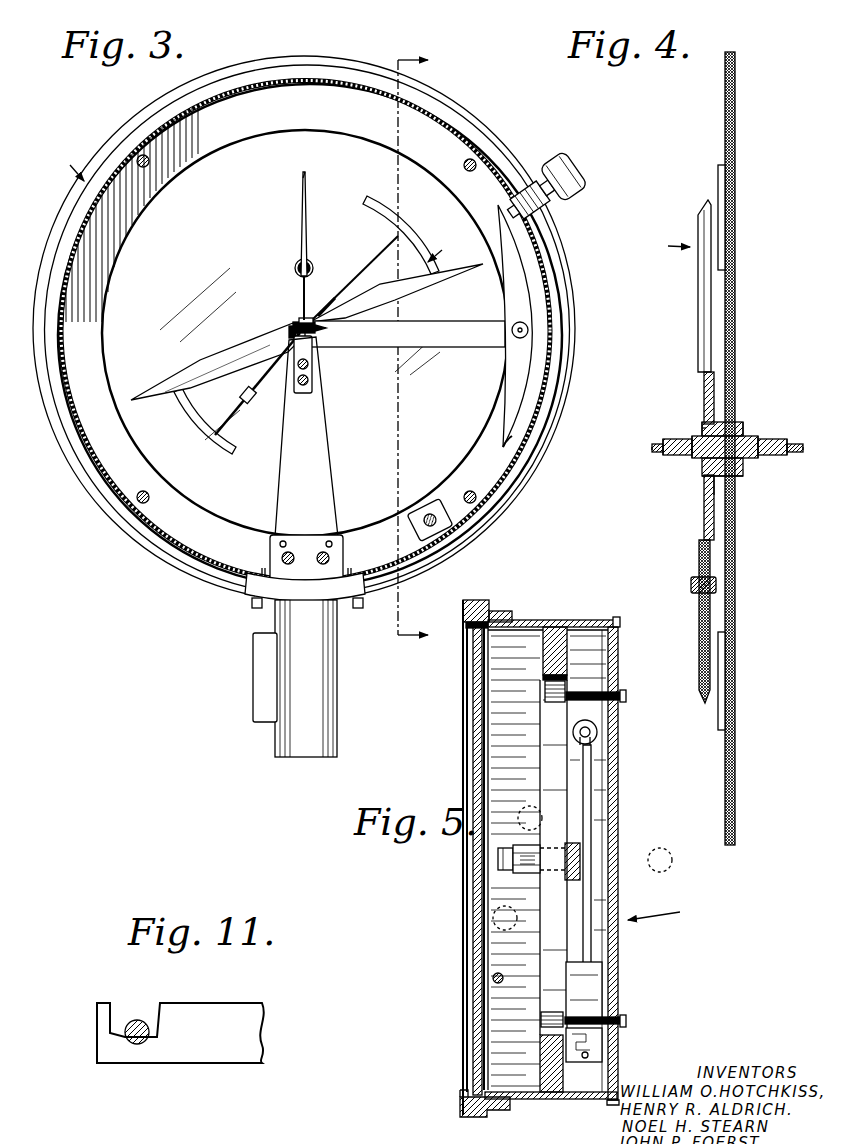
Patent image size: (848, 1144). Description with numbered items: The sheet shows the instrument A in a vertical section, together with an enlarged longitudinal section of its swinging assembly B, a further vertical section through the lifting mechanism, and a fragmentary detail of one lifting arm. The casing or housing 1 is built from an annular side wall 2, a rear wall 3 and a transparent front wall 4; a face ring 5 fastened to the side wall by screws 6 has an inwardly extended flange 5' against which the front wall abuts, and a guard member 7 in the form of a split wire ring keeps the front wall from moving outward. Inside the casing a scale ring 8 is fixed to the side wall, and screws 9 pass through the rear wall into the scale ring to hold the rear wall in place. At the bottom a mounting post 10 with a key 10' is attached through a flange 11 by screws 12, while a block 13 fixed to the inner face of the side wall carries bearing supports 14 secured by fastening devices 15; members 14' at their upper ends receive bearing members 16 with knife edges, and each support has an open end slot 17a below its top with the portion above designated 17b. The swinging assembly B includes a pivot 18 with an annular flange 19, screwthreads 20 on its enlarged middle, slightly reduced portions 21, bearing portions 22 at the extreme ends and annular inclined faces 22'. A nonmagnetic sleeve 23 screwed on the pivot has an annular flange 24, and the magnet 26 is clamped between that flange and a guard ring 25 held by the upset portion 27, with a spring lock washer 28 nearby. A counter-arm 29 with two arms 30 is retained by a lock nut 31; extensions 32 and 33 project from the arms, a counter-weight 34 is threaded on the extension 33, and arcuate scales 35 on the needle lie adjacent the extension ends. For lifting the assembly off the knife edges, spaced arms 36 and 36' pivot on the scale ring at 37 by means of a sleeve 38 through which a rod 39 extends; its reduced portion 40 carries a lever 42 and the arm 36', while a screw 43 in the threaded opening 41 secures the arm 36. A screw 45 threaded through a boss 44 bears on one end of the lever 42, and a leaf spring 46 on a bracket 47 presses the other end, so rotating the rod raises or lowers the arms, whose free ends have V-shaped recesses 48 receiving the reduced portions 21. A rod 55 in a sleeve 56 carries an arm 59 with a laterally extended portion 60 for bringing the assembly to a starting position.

In FIG. 3, the casing or housing 1 is at (152, 134).
In FIG. 5, the casing or housing 1 is at (562, 620).
In FIG. 3, the annular side wall 2 is at (565, 362).
In FIG. 5, the annular side wall 2 is at (528, 1100).
In FIG. 5, the rear wall 3 is at (620, 752).
In FIG. 3, the transparent front wall 4 is at (157, 240).
In FIG. 5, the transparent front wall 4 is at (473, 750).
In FIG. 3, the face ring 5 is at (310, 349).
In FIG. 5, the face ring 5 is at (474, 597).
In FIG. 5, the inwardly extended flange 5' is at (502, 598).
In FIG. 5, the screws 6 is at (492, 978).
In FIG. 5, the guard member 7 is at (463, 652).
In FIG. 3, the scale ring 8 is at (194, 560).
In FIG. 5, the scale ring 8 is at (570, 622).
In FIG. 3, the screws 9 is at (137, 157).
In FIG. 5, the screws 9 is at (590, 693).
In FIG. 3, the mounting post 10 is at (297, 697).
In FIG. 3, the key 10' is at (242, 677).
In FIG. 3, the flange 11 is at (307, 595).
In FIG. 3, the screws 12 is at (252, 604).
In FIG. 3, the block 13 is at (268, 550).
In FIG. 3, the bearing supports 14 is at (289, 437).
In FIG. 3, the members 14' is at (325, 367).
In FIG. 3, the fastening devices 15 is at (321, 552).
In FIG. 3, the bearing members 16 is at (290, 334).
In FIG. 3, the open end slot 17a is at (324, 329).
In FIG. 3, the portion of bearing support above slot 17b is at (310, 318).
In FIG. 3, the pivot 18 is at (295, 322).
In FIG. 4, the pivot 18 is at (685, 436).
In FIG. 4, the annular flange 19 is at (770, 438).
In FIG. 4, the screwthreads 20 is at (700, 460).
In FIG. 4, the portions of pivot 21 is at (672, 455).
In FIG. 11, the portions of pivot 21 is at (146, 1045).
In FIG. 4, the bearing portions 22 is at (722, 460).
In FIG. 4, the annular inclined faces 22' is at (710, 444).
In FIG. 4, the nonmagnetic sleeve 23 is at (726, 422).
In FIG. 4, the annular flange 24 is at (735, 493).
In FIG. 4, the guard ring 25 is at (735, 470).
In FIG. 3, the magnet 26 is at (197, 368).
In FIG. 4, the magnet 26 is at (737, 592).
In FIG. 4, the upset portion 27 is at (748, 430).
In FIG. 4, the spring lock washer 28 is at (702, 426).
In FIG. 4, the counter-arm 29 is at (716, 420).
In FIG. 3, the arms 30 is at (333, 298).
In FIG. 4, the arms 30 is at (716, 374).
In FIG. 4, the lock nut 31 is at (712, 478).
In FIG. 3, the counter-arm extension 32 is at (398, 238).
In FIG. 4, the counter-arm extension 32 is at (698, 305).
In FIG. 3, the counter-arm extension 33 is at (227, 415).
In FIG. 4, the counter-arm extension 33 is at (699, 650).
In FIG. 3, the counter-weight 34 is at (250, 396).
In FIG. 4, the counter-weight 34 is at (691, 585).
In FIG. 3, the arcuate scales 35 is at (386, 207).
In FIG. 4, the arcuate scales 35 is at (718, 178).
In FIG. 5, the arm 36 is at (485, 878).
In FIG. 3, the arm 36' is at (405, 327).
In FIG. 5, the arm 36' is at (612, 872).
In FIG. 11, the arm 36' is at (186, 1014).
In FIG. 3, the pivot point 37 is at (530, 330).
In FIG. 5, the pivot point 37 is at (502, 862).
In FIG. 5, the sleeve 38 is at (528, 876).
In FIG. 5, the rod 39 is at (535, 845).
In FIG. 3, the reduced portion 40 is at (528, 334).
In FIG. 5, the reduced portion 40 is at (595, 857).
In FIG. 5, the screwthreaded opening 41 is at (520, 880).
In FIG. 3, the lever 42 is at (520, 270).
In FIG. 5, the lever 42 is at (592, 815).
In FIG. 5, the screw 43 is at (497, 857).
In FIG. 3, the boss 44 is at (552, 208).
In FIG. 5, the boss 44 is at (598, 736).
In FIG. 3, the screw 45 is at (577, 173).
In FIG. 5, the screw 45 is at (597, 728).
In FIG. 3, the leaf spring 46 is at (512, 438).
In FIG. 5, the leaf spring 46 is at (603, 985).
In FIG. 3, the bracket 47 is at (448, 530).
In FIG. 5, the bracket 47 is at (580, 1064).
In FIG. 11, the recesses 48 is at (113, 1020).
In FIG. 3, the rod 55 is at (295, 270).
In FIG. 3, the sleeve 56 is at (312, 268).
In FIG. 3, the arm 59 is at (301, 197).
In FIG. 3, the laterally extended portion 60 is at (306, 178).
In FIG. 3, the instrument A is at (71, 162).
In FIG. 5, the instrument A is at (664, 910).
In FIG. 3, the swinging assembly B is at (443, 247).
In FIG. 4, the swinging assembly B is at (671, 246).